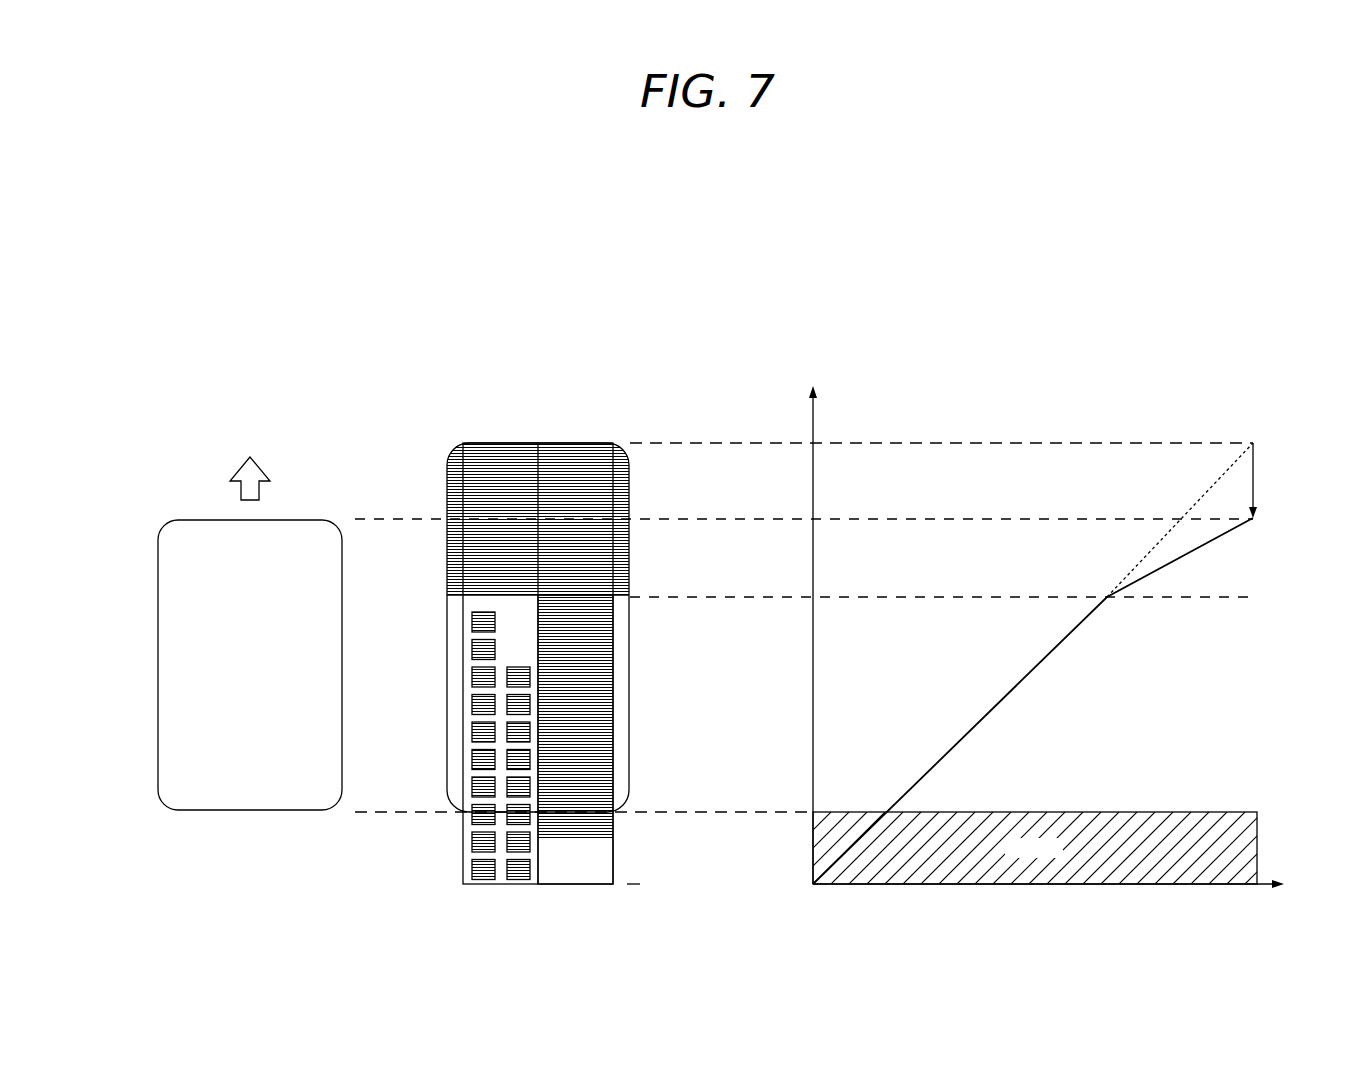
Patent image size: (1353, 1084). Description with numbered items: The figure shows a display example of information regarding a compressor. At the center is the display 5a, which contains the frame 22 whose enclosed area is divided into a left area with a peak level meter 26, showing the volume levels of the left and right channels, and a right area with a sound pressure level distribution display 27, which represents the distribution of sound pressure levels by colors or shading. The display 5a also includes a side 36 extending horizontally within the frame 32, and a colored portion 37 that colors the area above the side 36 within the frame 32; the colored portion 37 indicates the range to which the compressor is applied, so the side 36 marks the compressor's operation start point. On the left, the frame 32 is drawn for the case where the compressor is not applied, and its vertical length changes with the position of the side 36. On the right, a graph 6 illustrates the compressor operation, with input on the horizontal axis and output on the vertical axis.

The display 5a is at (521, 276).
The graph 6 is at (1031, 276).
The frame 32 is at (158, 622).
The colored portion 37 is at (486, 553).
The side 36 is at (585, 595).
The sound pressure level distribution display 27 is at (578, 848).
The peak level meter 26 is at (458, 843).
The frame 22 is at (463, 870).